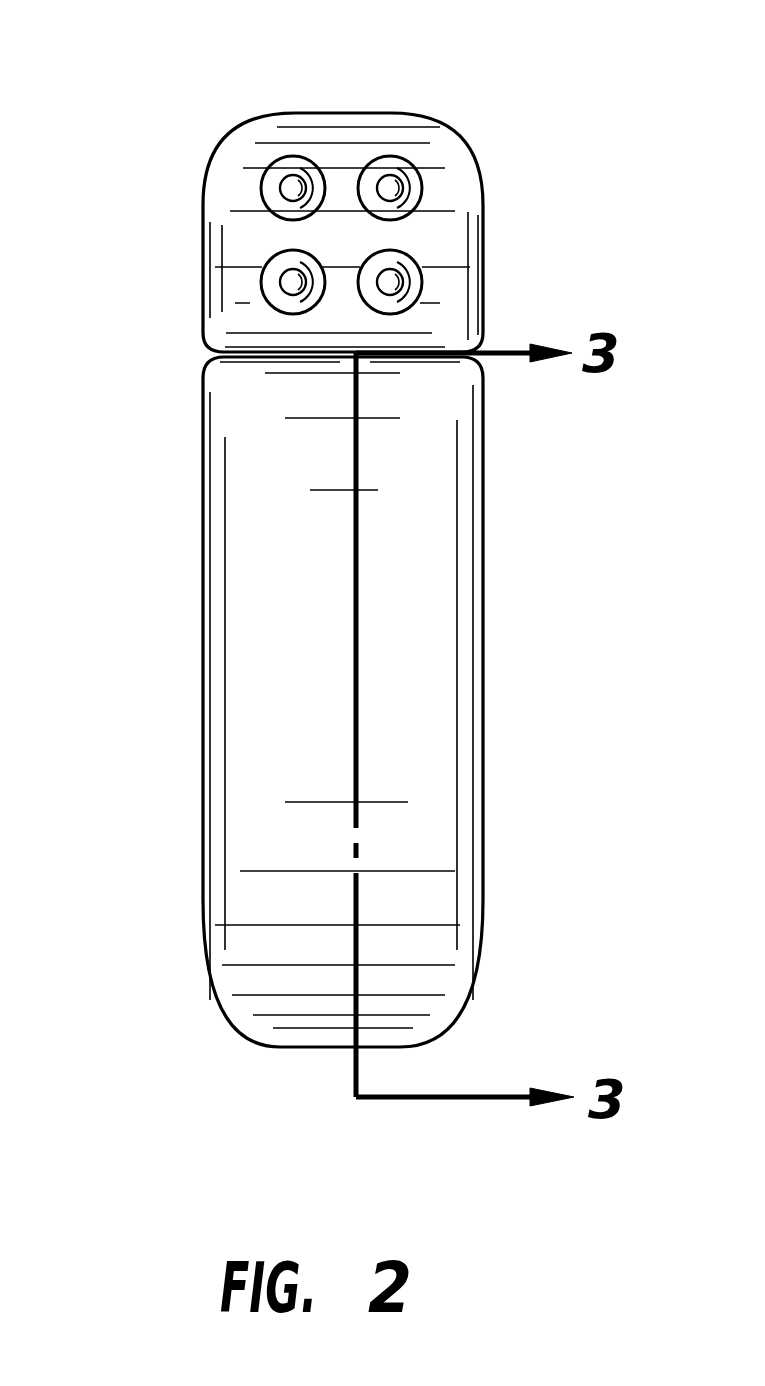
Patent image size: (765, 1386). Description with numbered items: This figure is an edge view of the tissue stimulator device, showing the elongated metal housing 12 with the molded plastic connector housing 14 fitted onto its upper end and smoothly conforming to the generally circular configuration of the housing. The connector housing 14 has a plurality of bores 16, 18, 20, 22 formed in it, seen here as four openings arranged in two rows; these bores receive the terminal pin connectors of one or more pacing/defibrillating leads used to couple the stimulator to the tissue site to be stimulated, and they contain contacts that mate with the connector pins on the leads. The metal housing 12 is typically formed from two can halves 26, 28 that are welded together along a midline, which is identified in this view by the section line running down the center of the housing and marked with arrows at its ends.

The metal housing 12 is at (200, 735).
The connector housing 14 is at (230, 147).
The bore 16 is at (306, 156).
The bore 18 is at (415, 156).
The bore 20 is at (262, 268).
The bore 22 is at (420, 268).
The can half 26 is at (483, 588).
The can half 28 is at (200, 595).